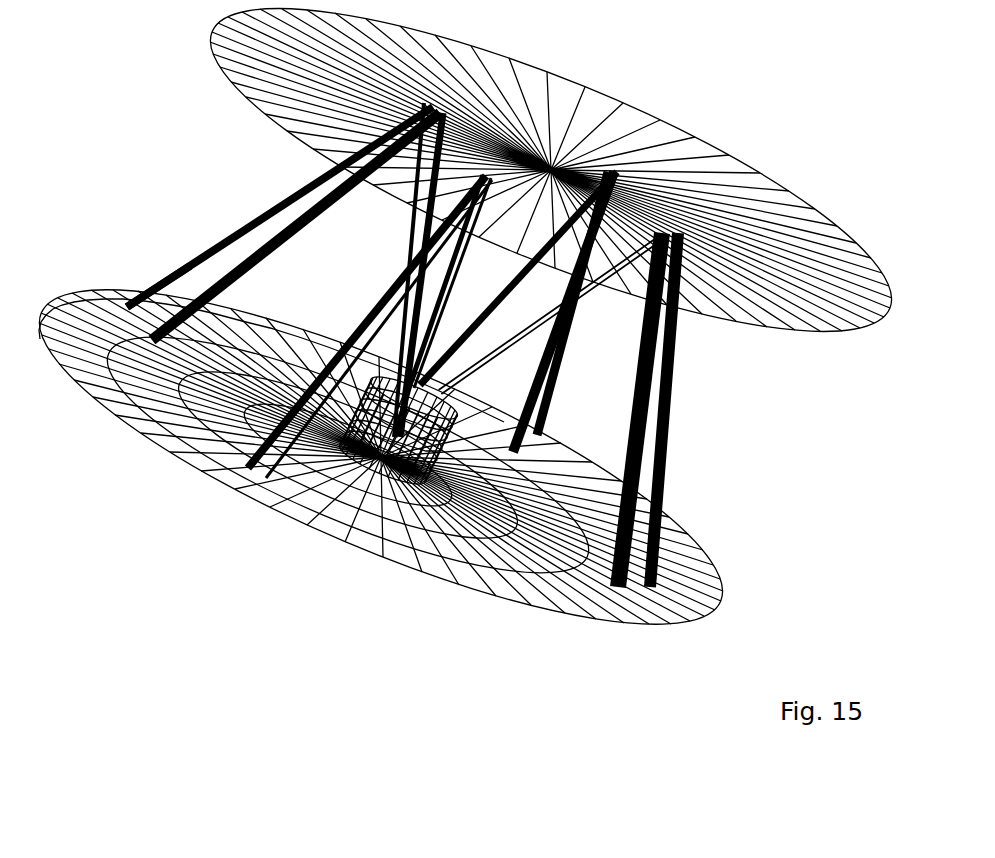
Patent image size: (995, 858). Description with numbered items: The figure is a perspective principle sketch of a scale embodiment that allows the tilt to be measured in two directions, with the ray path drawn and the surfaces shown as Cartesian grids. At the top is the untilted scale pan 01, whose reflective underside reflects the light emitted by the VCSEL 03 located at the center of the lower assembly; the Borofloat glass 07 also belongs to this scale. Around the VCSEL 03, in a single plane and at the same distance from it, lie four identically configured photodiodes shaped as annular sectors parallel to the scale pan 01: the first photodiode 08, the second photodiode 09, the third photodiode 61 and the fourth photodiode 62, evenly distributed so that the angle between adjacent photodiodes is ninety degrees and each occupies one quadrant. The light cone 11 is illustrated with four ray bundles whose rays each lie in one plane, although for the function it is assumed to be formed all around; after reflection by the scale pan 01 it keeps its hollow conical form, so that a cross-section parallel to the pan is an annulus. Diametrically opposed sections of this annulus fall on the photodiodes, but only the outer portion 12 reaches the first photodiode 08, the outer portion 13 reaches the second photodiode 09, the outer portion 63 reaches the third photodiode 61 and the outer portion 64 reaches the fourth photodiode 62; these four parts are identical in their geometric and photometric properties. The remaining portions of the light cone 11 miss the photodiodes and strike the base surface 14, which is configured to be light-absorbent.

The untilted scale pan 01 is at (590, 105).
The VCSEL 03 is at (356, 474).
The Borofloat glass 07 is at (537, 575).
The first photodiode 08 is at (100, 290).
The second photodiode 09 is at (690, 580).
The light cone 11 is at (297, 195).
The outer portion 12 is at (130, 288).
The outer portion 13 is at (663, 567).
The base surface 14 is at (398, 552).
The third photodiode 61 is at (268, 476).
The fourth photodiode 62 is at (560, 446).
The outer portion 63 is at (247, 470).
The outer portion 64 is at (543, 427).